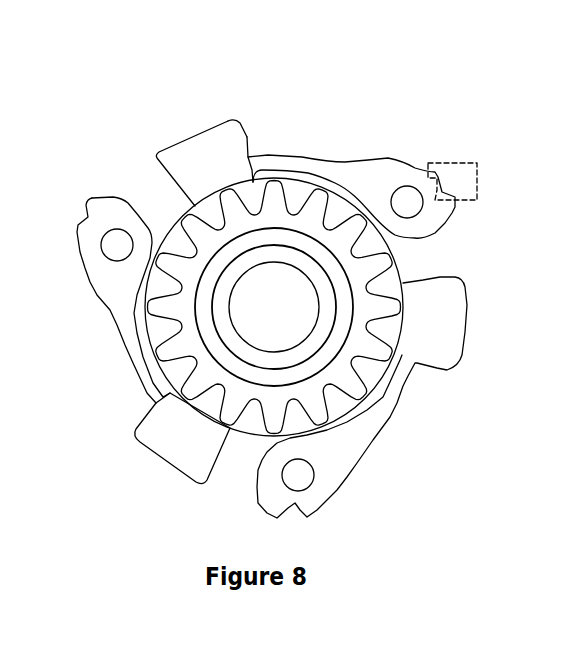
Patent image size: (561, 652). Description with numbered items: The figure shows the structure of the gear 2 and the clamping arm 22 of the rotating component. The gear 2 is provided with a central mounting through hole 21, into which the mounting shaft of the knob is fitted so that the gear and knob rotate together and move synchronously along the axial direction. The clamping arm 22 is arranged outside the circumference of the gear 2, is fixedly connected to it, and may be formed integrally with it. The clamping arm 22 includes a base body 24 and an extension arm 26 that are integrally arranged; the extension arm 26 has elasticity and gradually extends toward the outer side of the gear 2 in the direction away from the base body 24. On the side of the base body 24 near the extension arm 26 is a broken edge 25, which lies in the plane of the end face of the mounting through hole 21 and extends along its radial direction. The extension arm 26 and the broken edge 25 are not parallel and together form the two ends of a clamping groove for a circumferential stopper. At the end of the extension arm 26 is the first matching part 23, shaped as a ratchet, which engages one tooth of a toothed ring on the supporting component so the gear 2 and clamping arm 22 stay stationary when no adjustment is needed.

The gear 2 is at (186, 350).
The mounting through hole 21 is at (268, 318).
The clamping arm 22 is at (227, 108).
The first matching part 23 is at (477, 163).
The base body 24 is at (181, 156).
The broken edge 25 is at (247, 136).
The extension arm 26 is at (360, 158).